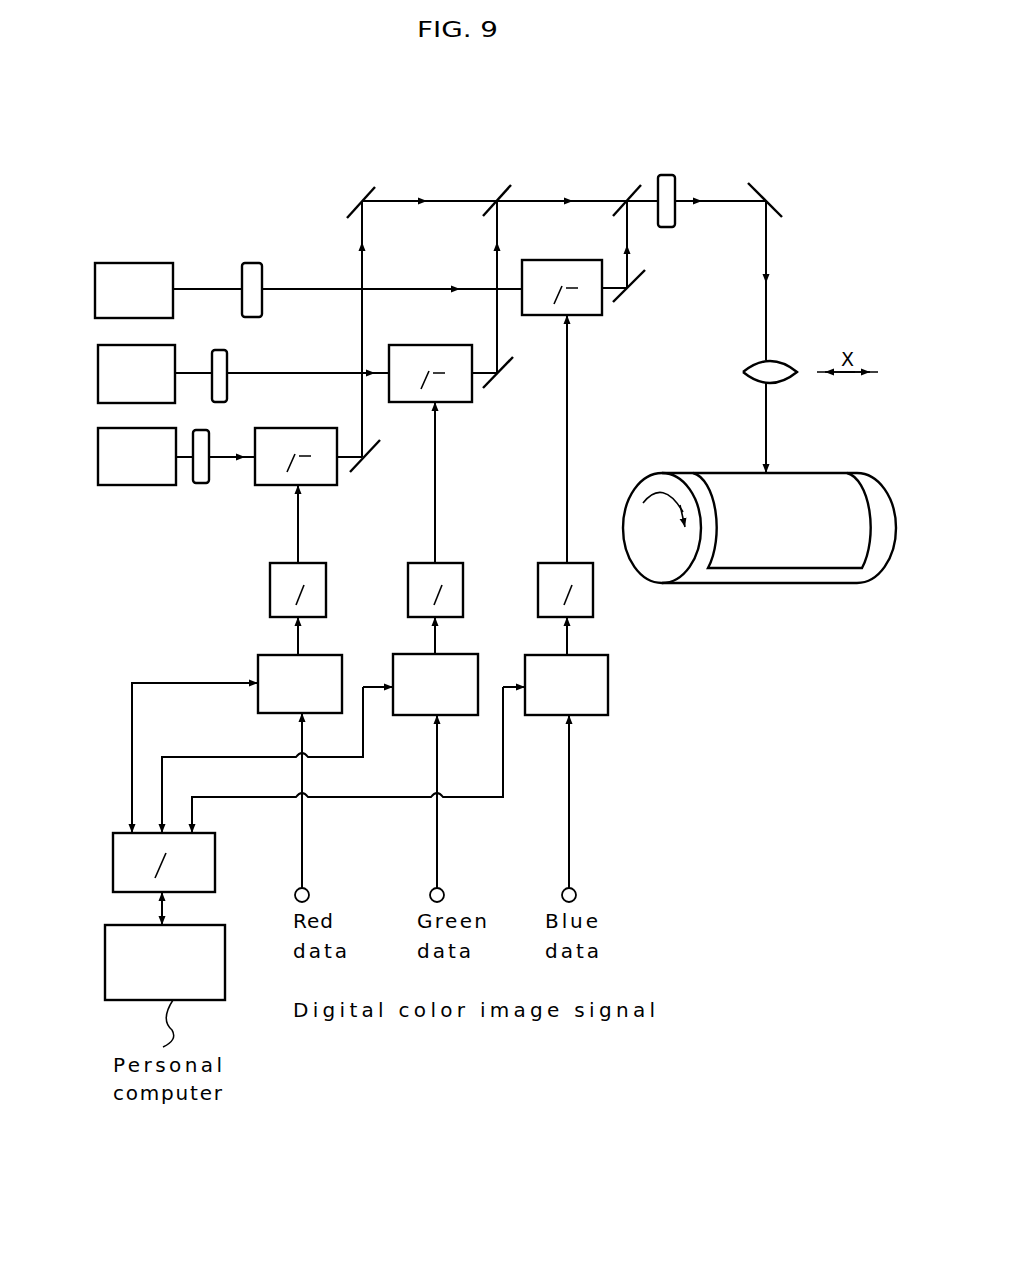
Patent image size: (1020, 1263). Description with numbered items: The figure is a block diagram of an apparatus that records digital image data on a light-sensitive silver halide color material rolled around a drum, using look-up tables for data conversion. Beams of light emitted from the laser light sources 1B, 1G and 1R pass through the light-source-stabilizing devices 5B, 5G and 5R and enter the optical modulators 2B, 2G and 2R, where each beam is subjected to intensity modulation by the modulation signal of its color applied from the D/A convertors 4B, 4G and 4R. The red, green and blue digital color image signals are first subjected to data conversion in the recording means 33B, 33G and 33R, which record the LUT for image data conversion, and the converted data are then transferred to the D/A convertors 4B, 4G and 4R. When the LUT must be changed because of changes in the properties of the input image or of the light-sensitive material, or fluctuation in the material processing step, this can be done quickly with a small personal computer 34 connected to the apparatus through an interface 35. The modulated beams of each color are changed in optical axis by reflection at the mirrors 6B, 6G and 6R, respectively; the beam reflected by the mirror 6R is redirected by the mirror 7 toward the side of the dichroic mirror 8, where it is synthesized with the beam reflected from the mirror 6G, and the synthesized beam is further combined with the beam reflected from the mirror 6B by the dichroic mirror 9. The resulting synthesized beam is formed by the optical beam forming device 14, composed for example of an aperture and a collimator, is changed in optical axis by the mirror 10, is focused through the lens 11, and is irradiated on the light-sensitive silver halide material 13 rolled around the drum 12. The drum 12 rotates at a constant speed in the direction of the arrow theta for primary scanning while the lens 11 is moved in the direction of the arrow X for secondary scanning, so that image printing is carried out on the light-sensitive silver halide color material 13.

The laser light source 1B is at (145, 263).
The laser light source 1G is at (97, 375).
The laser light source 1R is at (98, 456).
The light-source-stabilizing device 5B is at (252, 263).
The light-source-stabilizing device 5G is at (218, 349).
The light-source-stabilizing device 5R is at (202, 487).
The optical modulator 2B is at (555, 258).
The optical modulator 2G is at (422, 343).
The optical modulator 2R is at (285, 427).
The mirror 6B is at (642, 280).
The mirror 6G is at (510, 377).
The mirror 6R is at (377, 457).
The mirror 7 is at (367, 192).
The dichroic mirror 8 is at (505, 187).
The dichroic mirror 9 is at (637, 187).
The optical beam forming device 14 is at (667, 173).
The mirror 10 is at (775, 202).
The lens 11 is at (782, 360).
The drum 12 is at (882, 503).
The light-sensitive silver halide color material 13 is at (817, 487).
The D/A convertor 4R is at (277, 562).
The D/A convertor 4G is at (408, 585).
The D/A convertor 4B is at (538, 585).
The recording means 33R is at (342, 660).
The recording means 33G is at (478, 660).
The recording means 33B is at (608, 670).
The interface 35 is at (215, 853).
The personal computer 34 is at (223, 923).